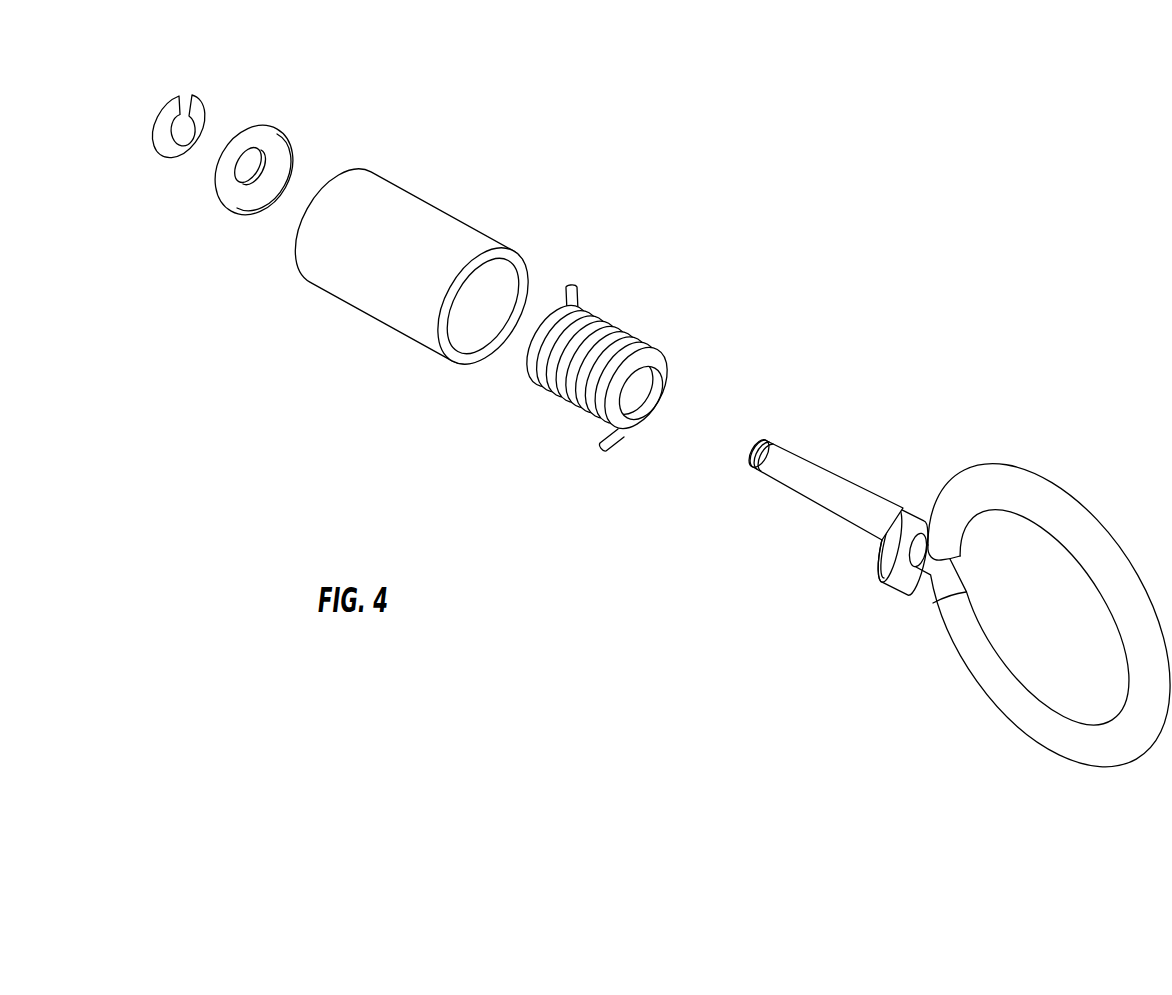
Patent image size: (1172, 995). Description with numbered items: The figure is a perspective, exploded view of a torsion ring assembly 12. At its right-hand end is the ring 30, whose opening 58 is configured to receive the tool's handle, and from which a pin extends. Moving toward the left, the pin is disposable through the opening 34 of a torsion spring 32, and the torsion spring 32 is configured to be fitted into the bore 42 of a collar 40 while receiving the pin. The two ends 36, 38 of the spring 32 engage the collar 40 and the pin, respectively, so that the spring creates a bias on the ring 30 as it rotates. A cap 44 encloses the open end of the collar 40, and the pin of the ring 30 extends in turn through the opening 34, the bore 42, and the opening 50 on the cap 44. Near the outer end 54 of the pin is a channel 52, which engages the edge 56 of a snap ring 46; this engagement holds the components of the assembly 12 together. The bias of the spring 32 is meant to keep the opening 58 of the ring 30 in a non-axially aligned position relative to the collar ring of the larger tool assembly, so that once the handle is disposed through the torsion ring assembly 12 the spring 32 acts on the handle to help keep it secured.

The torsion ring assembly 12 is at (867, 268).
The ring 30 is at (1037, 483).
The torsion spring 32 is at (609, 373).
The opening 34 is at (653, 392).
The end 36 is at (578, 302).
The end 38 is at (610, 440).
The collar 40 is at (426, 266).
The bore 42 is at (503, 278).
The cap 44 is at (254, 165).
The snap ring 46 is at (200, 98).
The opening 50 is at (243, 172).
The channel 52 is at (762, 443).
The end 54 is at (753, 443).
The edge 56 is at (190, 147).
The opening 58 is at (1013, 612).